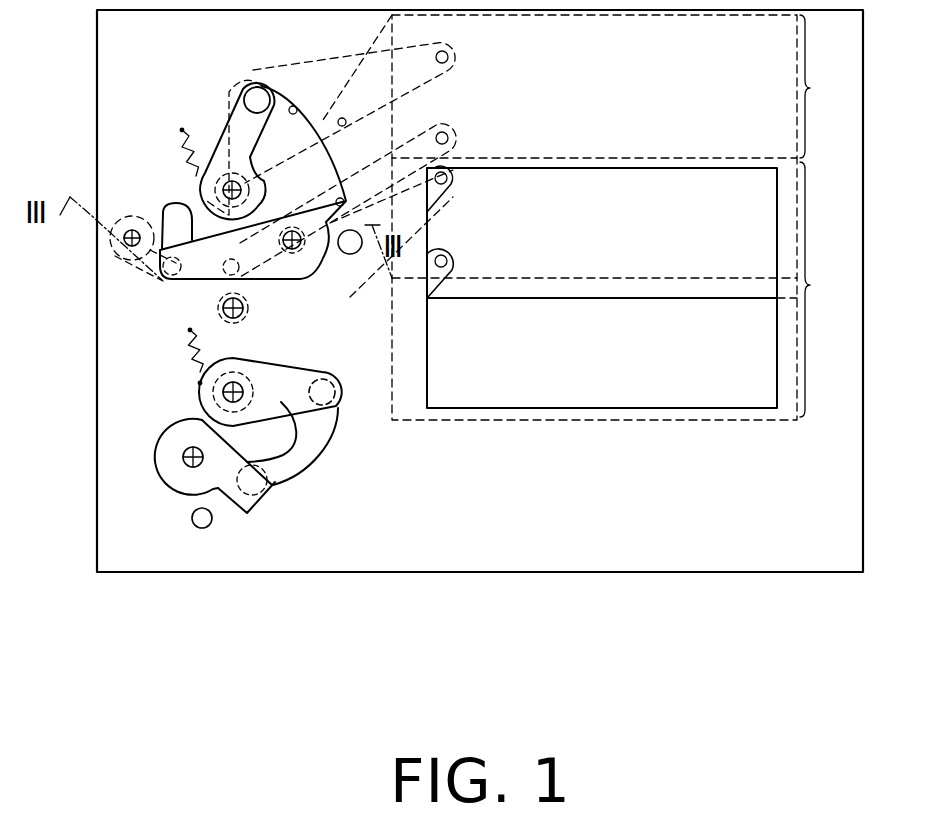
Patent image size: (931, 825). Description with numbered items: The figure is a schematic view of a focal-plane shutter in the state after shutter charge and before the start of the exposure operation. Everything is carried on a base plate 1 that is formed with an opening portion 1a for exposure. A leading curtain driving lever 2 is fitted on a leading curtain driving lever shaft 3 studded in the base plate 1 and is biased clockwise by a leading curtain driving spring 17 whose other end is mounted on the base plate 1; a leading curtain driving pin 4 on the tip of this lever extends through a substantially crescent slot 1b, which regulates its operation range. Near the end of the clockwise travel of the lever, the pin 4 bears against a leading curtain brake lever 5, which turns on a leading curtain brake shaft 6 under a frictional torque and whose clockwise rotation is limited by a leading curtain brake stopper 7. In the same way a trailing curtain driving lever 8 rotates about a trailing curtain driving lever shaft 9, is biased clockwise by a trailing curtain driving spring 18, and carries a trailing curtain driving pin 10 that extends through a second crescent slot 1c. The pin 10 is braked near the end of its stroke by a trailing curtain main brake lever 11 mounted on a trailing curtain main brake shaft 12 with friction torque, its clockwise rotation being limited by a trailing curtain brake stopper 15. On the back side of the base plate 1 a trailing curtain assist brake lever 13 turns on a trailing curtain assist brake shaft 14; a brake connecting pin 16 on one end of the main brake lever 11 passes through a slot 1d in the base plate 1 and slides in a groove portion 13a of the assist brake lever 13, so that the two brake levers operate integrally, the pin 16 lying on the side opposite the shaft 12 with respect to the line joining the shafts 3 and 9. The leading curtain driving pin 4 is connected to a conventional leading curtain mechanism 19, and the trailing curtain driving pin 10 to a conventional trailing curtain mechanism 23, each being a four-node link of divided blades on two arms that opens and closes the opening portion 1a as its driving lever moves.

The base plate 1 is at (775, 556).
The opening portion 1a is at (580, 404).
The slot 1b is at (283, 472).
The slot 1c is at (297, 108).
The slot 1d is at (163, 208).
The leading curtain driving lever 2 is at (297, 435).
The leading curtain driving lever shaft 3 is at (222, 393).
The leading curtain driving pin 4 is at (336, 408).
The leading curtain brake lever 5 is at (243, 518).
The leading curtain brake shaft 6 is at (185, 465).
The leading curtain brake stopper 7 is at (202, 528).
The trailing curtain driving lever 8 is at (233, 133).
The trailing curtain driving lever shaft 9 is at (226, 187).
The trailing curtain driving pin 10 is at (255, 86).
The trailing curtain main brake lever 11 is at (192, 281).
The trailing curtain main brake shaft 12 is at (292, 250).
The trailing curtain assist brake lever 13 is at (110, 268).
The groove portion 13a is at (118, 288).
The trailing curtain assist brake shaft 14 is at (124, 238).
The trailing curtain brake stopper 15 is at (355, 254).
The brake connecting pin 16 is at (160, 293).
The leading curtain driving spring 17 is at (185, 357).
The trailing curtain driving spring 18 is at (182, 130).
The leading curtain mechanism 19 is at (621, 289).
The trailing curtain mechanism 23 is at (621, 86).